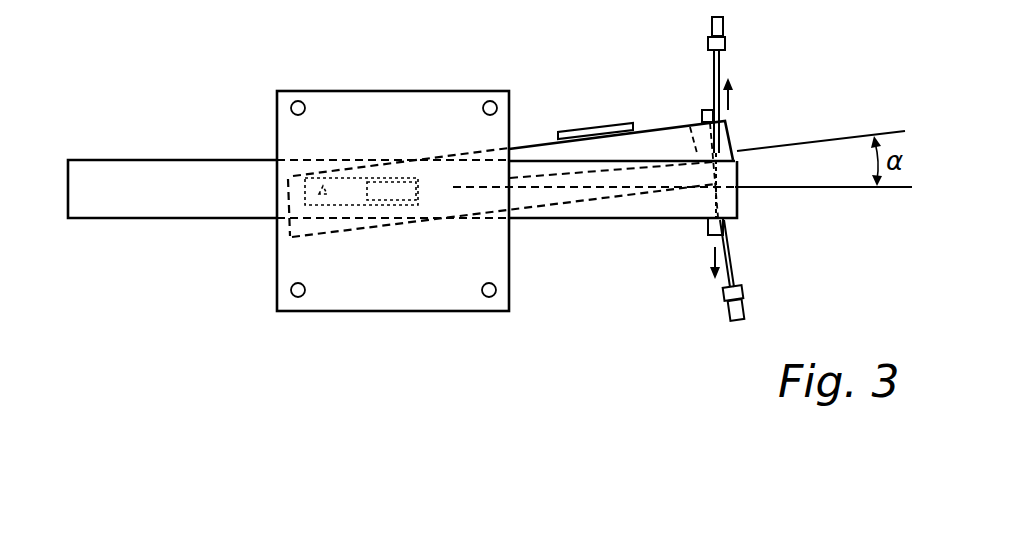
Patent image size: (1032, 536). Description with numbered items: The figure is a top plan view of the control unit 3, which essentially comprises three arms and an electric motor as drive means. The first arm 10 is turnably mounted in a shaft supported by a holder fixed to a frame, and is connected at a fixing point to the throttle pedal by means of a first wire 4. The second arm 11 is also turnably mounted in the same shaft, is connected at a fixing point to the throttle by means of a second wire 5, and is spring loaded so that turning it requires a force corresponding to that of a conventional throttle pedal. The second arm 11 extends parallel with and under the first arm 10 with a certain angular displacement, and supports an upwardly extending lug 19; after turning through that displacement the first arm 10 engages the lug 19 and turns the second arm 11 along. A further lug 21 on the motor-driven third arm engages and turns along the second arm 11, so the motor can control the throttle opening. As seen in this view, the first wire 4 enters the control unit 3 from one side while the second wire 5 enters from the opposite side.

The control unit 3 is at (468, 389).
The first wire 4 is at (720, 73).
The second wire 5 is at (732, 258).
The first arm 10 is at (590, 207).
The second arm 11 is at (653, 142).
The lug 19 is at (590, 135).
The lug 21 is at (663, 195).